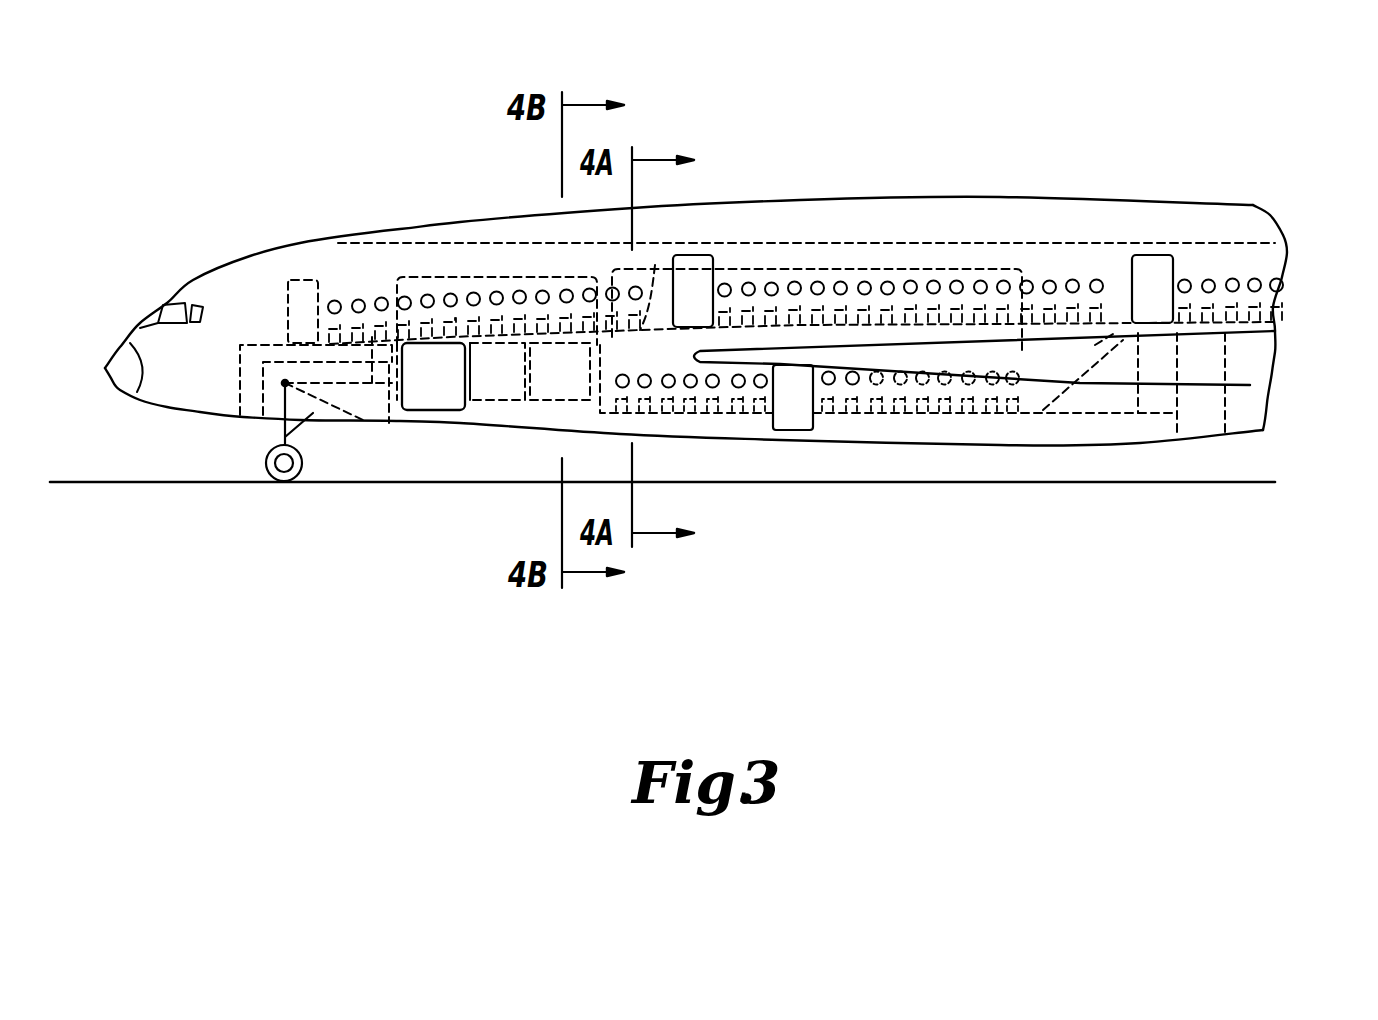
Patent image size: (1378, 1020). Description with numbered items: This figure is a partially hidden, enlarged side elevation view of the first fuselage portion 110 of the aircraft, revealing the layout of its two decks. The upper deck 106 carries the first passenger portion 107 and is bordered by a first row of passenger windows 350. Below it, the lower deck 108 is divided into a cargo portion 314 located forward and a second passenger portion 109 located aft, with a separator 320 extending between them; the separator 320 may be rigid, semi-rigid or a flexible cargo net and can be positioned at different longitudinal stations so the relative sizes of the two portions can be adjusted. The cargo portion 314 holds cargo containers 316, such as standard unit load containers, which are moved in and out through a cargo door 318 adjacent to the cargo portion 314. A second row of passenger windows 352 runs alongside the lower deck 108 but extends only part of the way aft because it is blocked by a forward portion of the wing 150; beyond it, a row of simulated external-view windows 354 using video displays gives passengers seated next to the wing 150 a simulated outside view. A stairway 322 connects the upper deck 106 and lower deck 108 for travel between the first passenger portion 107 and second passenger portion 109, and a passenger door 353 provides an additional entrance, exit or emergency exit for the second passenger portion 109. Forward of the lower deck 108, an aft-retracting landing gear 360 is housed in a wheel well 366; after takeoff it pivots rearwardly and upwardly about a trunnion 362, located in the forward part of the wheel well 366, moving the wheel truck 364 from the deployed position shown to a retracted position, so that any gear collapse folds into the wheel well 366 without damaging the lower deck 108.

The upper deck 106 is at (421, 267).
The first passenger portion 107 is at (922, 245).
The lower deck 108 is at (398, 380).
The second passenger portion 109 is at (820, 268).
The first fuselage portion 110 is at (462, 221).
The wing 150 is at (1247, 385).
The cargo portion 314 is at (497, 277).
The cargo containers 316 is at (557, 392).
The cargo door 318 is at (415, 410).
The separator 320 is at (655, 265).
The stairway 322 is at (1043, 410).
The first row of passenger windows 350 is at (334, 300).
The second row of passenger windows 352 is at (760, 388).
The passenger door 353 is at (795, 432).
The simulated external-view windows 354 is at (1010, 385).
The landing gear 360 is at (283, 437).
The trunnion 362 is at (285, 383).
The wheel truck 364 is at (268, 472).
The wheel well 366 is at (392, 385).